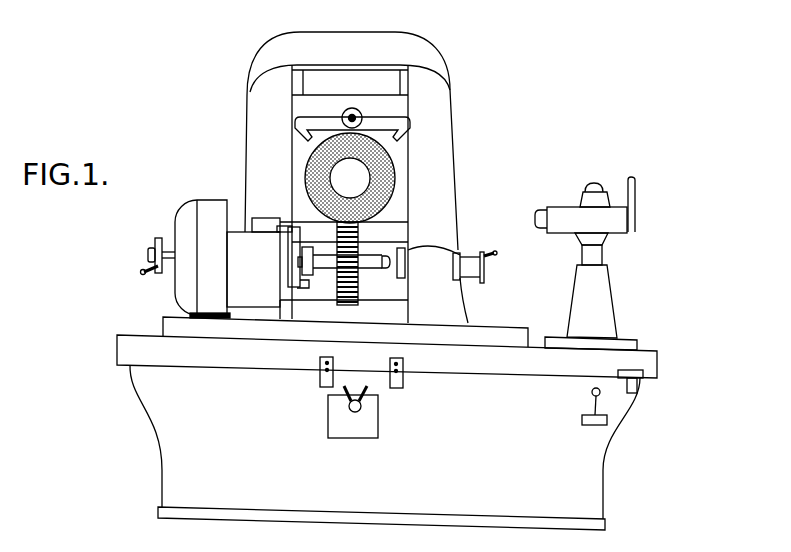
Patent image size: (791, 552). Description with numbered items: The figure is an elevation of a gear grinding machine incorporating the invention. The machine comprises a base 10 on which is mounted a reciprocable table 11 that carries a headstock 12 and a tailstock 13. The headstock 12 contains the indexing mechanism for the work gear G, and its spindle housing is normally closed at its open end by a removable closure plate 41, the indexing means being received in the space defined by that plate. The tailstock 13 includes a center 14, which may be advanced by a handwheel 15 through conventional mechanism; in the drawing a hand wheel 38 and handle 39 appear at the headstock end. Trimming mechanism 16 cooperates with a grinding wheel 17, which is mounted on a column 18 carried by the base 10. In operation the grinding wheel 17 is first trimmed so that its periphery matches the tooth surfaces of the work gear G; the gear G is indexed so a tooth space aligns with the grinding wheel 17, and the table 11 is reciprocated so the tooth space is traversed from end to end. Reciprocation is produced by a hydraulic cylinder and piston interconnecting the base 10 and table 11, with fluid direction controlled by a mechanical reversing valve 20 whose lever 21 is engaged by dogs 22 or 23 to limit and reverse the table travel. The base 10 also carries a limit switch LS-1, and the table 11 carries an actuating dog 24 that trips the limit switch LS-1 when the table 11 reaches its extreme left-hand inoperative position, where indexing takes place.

The base 10 is at (172, 455).
The reciprocable table 11 is at (130, 337).
The headstock 12 is at (252, 247).
The tailstock 13 is at (440, 258).
The center 14 is at (391, 270).
The handwheel 15 is at (487, 268).
The trimming mechanism 16 is at (612, 226).
The grinding wheel 17 is at (387, 160).
The column 18 is at (443, 152).
The mechanical reversing valve 20 is at (377, 432).
The lever 21 is at (347, 404).
The dog 22 is at (405, 378).
The dog 23 is at (322, 375).
The actuating dog 24 is at (636, 386).
The hand wheel 38 is at (158, 238).
The handle 39 is at (142, 270).
The removable closure plate 41 is at (187, 212).
The work gear G is at (358, 243).
The limit switch LS-1 is at (600, 420).